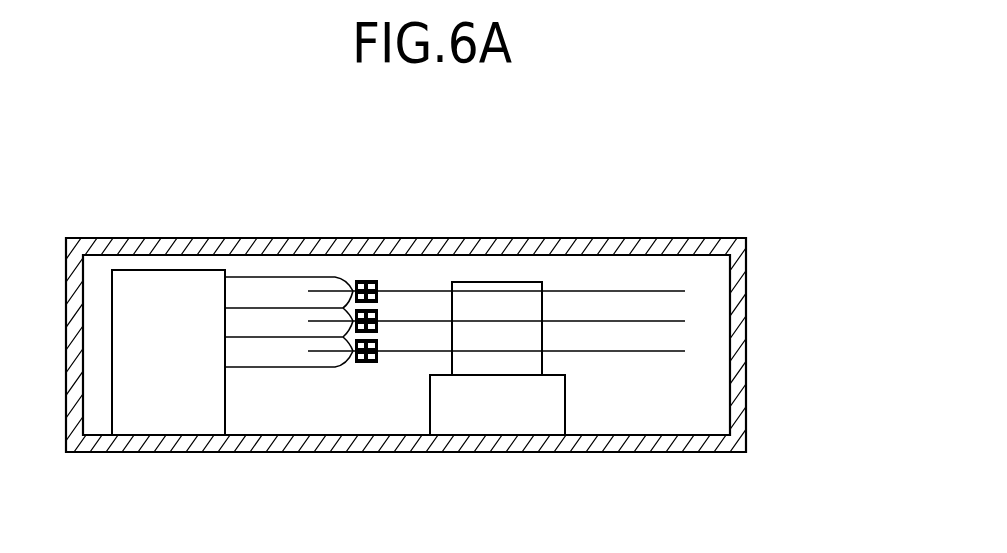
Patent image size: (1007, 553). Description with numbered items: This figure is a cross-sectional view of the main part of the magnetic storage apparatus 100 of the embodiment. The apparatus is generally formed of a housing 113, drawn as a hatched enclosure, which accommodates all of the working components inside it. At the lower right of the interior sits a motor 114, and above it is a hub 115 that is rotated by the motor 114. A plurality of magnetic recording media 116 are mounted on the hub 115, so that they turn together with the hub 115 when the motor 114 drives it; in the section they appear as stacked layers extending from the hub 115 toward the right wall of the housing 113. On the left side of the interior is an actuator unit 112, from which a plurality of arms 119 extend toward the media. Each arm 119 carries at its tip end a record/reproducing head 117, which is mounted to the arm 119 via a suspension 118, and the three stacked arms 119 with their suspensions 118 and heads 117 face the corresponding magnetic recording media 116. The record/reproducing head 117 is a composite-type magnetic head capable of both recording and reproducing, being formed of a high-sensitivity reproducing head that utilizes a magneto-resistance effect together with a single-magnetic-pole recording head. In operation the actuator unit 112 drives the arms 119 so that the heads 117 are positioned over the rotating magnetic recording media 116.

The magnetic storage apparatus 100 is at (695, 181).
The actuator unit 112 is at (170, 430).
The housing 113 is at (746, 397).
The motor 114 is at (497, 430).
The hub 115 is at (492, 282).
The magnetic recording media 116 is at (620, 291).
The record/reproducing head 117 is at (378, 283).
The suspension 118 is at (355, 280).
The arm 119 is at (262, 277).